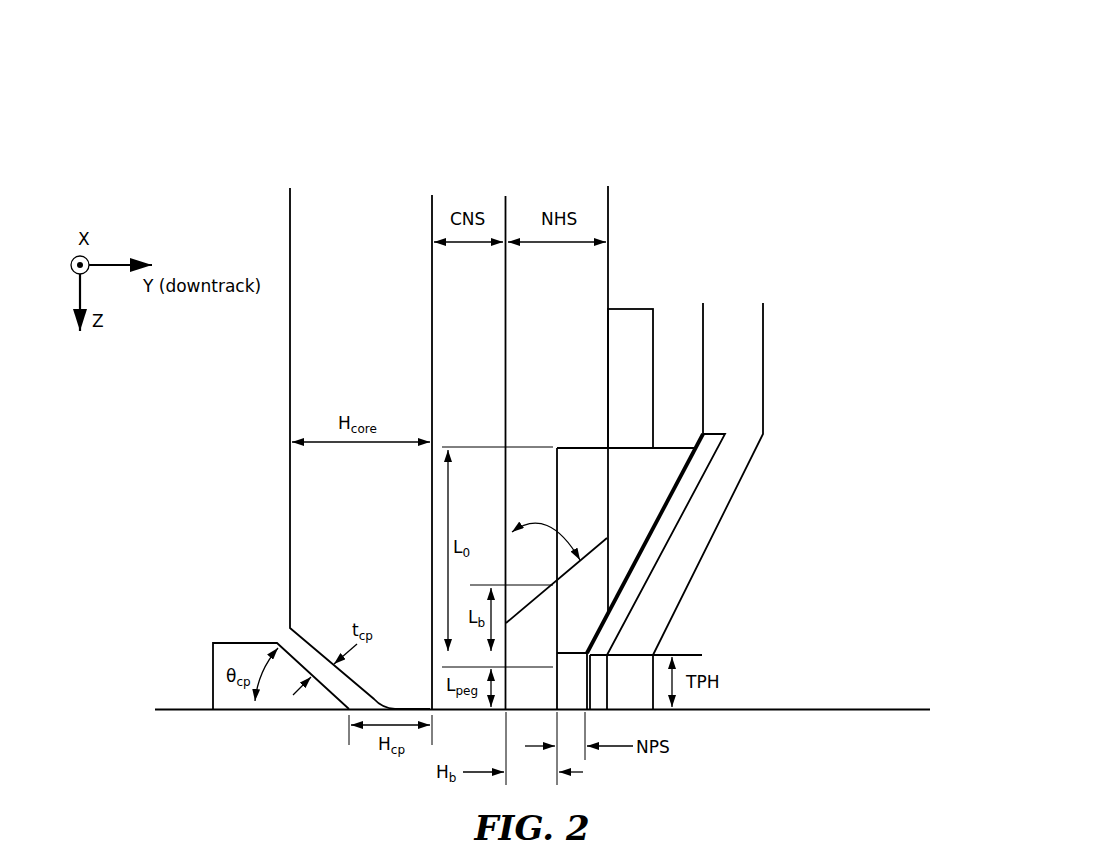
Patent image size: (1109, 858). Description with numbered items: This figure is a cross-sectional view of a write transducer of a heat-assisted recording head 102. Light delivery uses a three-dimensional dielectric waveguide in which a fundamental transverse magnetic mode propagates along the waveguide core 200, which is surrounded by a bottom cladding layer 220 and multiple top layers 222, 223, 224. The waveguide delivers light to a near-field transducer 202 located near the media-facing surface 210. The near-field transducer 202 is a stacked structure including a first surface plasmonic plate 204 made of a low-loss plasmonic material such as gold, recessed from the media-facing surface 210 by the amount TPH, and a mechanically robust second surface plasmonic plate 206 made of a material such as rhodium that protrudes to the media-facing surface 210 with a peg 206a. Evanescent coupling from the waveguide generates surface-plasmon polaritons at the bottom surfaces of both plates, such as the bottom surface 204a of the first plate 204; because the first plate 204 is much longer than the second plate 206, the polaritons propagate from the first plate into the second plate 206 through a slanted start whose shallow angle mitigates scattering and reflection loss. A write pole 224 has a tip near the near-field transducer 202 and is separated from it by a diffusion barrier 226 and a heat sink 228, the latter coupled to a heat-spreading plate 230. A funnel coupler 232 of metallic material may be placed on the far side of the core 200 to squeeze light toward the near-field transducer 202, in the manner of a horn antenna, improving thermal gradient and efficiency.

The heat-assisted magnetic recording head 102 is at (186, 50).
The waveguide core 200 is at (370, 202).
The near-field transducer 202 is at (614, 781).
The first surface plasmonic plate 204 is at (590, 458).
The bottom surface of the first plate 204a is at (555, 488).
The second surface plasmonic plate 206 is at (523, 625).
The peg 206a is at (537, 697).
The media-facing surface 210 is at (833, 712).
The bottom cladding layer 220 is at (229, 202).
The top cladding layer 222 is at (475, 188).
The top cladding layer 223 is at (573, 182).
The write pole 224 is at (682, 227).
The diffusion barrier 226 is at (709, 462).
The heat sink 228 is at (663, 450).
The heat-spreading plate 230 is at (625, 308).
The funnel coupler 232 is at (278, 702).